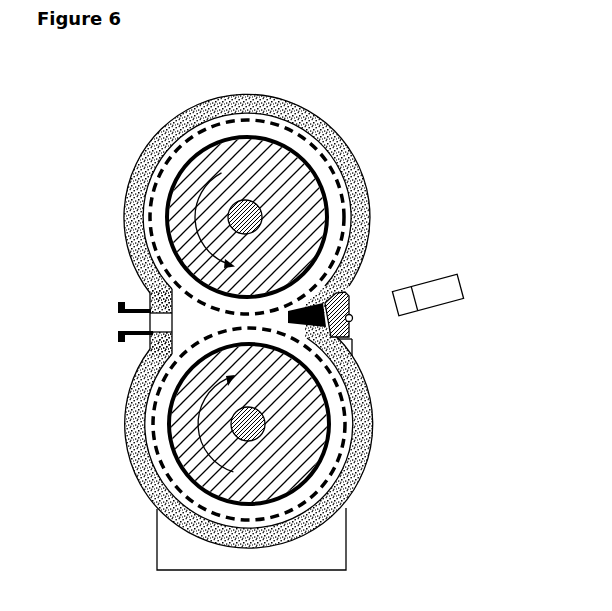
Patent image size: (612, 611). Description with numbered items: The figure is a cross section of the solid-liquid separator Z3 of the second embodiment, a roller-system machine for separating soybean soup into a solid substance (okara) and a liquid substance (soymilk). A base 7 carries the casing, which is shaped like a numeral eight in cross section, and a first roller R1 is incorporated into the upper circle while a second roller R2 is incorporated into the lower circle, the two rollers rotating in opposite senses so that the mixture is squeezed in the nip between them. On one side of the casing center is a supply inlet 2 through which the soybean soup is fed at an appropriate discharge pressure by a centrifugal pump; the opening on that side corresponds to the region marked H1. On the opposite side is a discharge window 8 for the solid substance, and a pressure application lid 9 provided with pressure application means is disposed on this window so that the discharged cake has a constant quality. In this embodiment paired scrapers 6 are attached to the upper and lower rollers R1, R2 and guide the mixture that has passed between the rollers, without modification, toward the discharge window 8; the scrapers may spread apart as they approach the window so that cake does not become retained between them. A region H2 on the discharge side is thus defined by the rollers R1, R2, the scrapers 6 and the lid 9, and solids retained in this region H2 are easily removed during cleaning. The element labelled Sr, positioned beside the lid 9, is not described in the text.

The first roller R1 is at (265, 112).
The second roller R2 is at (153, 486).
The solid-liquid separator Z3 is at (463, 42).
The supply inlet 2 is at (118, 310).
The scrapers 6 is at (350, 275).
The base 7 is at (338, 549).
The discharge window 8 is at (347, 335).
The pressure application lid 9 is at (352, 320).
The first opening H1 is at (182, 320).
The region on the discharge side H2 is at (316, 305).
The sensor Sr is at (457, 277).